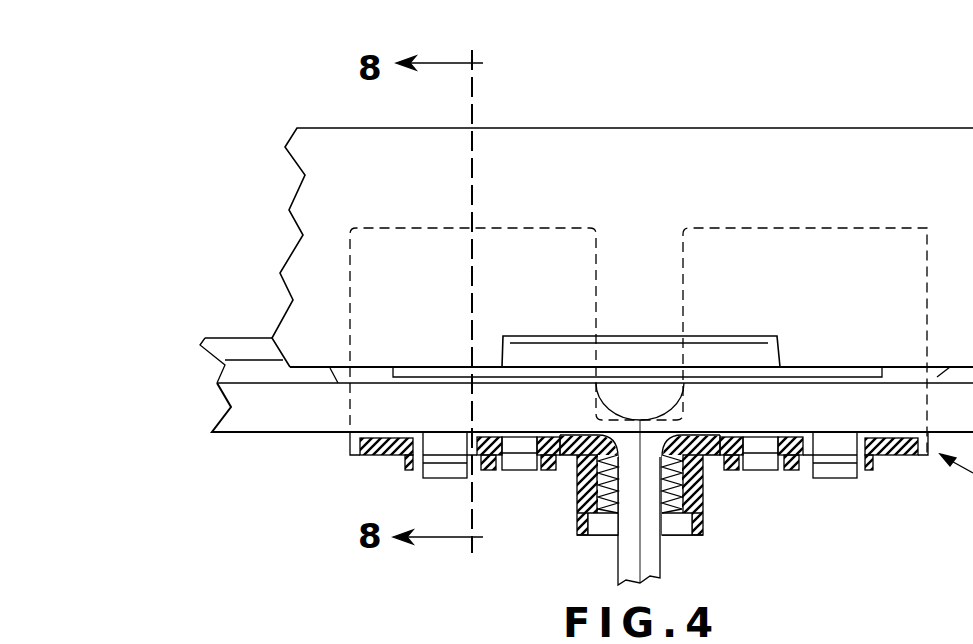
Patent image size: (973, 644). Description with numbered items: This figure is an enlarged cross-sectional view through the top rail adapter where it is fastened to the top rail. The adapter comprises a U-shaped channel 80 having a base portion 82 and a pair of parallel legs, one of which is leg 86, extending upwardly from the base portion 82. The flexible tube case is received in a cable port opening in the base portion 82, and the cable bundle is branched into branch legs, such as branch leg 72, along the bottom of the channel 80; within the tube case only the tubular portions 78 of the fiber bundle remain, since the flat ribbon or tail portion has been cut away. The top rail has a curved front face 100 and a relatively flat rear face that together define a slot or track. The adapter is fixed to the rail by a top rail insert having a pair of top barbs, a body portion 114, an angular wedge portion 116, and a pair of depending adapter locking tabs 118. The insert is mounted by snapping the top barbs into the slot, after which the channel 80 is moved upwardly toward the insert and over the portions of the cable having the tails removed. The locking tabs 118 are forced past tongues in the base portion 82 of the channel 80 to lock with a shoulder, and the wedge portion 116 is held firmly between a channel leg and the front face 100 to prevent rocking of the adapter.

The curved front face 100 is at (812, 127).
The parallel leg 86 is at (803, 227).
The angular wedge portion 116 is at (730, 350).
The body portion 114 is at (813, 365).
The branch leg 72 is at (252, 432).
The base portion 82 is at (380, 455).
The U-shaped channel 80 is at (892, 456).
The adapter locking tab 118 is at (445, 478).
The tubular portion 78 is at (650, 566).